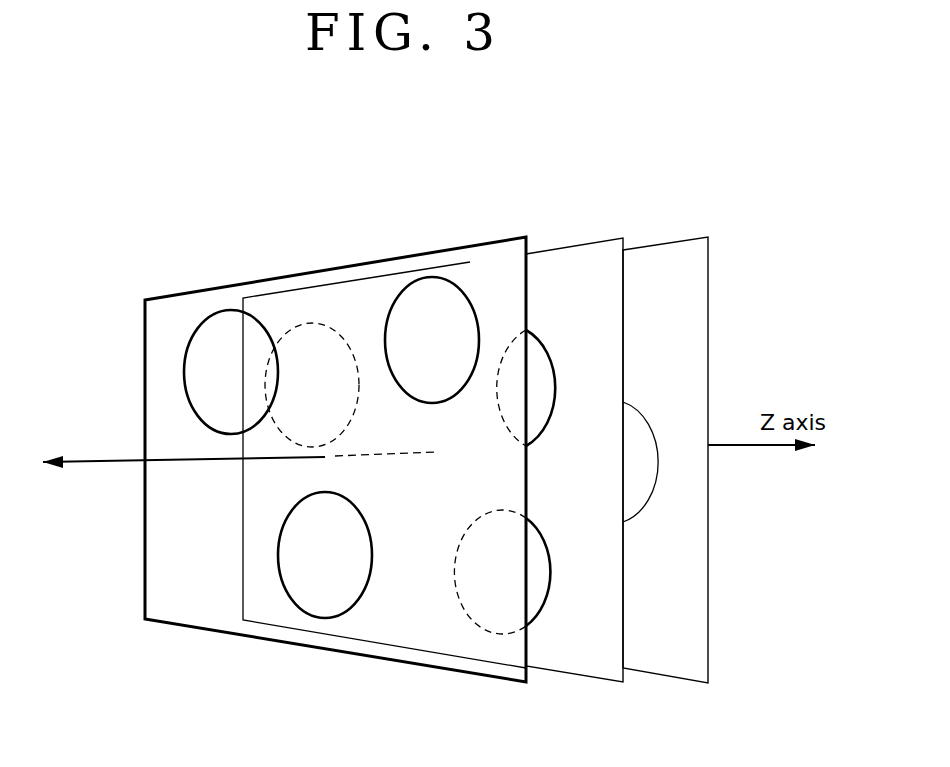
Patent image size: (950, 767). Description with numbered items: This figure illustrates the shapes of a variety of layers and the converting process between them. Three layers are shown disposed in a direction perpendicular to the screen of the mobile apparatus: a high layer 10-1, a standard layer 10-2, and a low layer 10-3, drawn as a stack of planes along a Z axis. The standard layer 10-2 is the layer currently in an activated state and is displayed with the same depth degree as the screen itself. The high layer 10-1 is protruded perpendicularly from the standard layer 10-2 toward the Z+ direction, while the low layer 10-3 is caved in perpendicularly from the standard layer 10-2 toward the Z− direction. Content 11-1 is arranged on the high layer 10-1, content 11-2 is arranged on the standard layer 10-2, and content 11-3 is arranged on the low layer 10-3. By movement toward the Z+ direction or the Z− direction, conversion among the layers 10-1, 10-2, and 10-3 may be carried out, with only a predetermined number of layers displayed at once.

The high layer 10-1 is at (502, 238).
The standard layer 10-2 is at (604, 240).
The low layer 10-3 is at (695, 240).
The content 11-1 is at (327, 492).
The content 11-2 is at (350, 422).
The content 11-3 is at (650, 485).